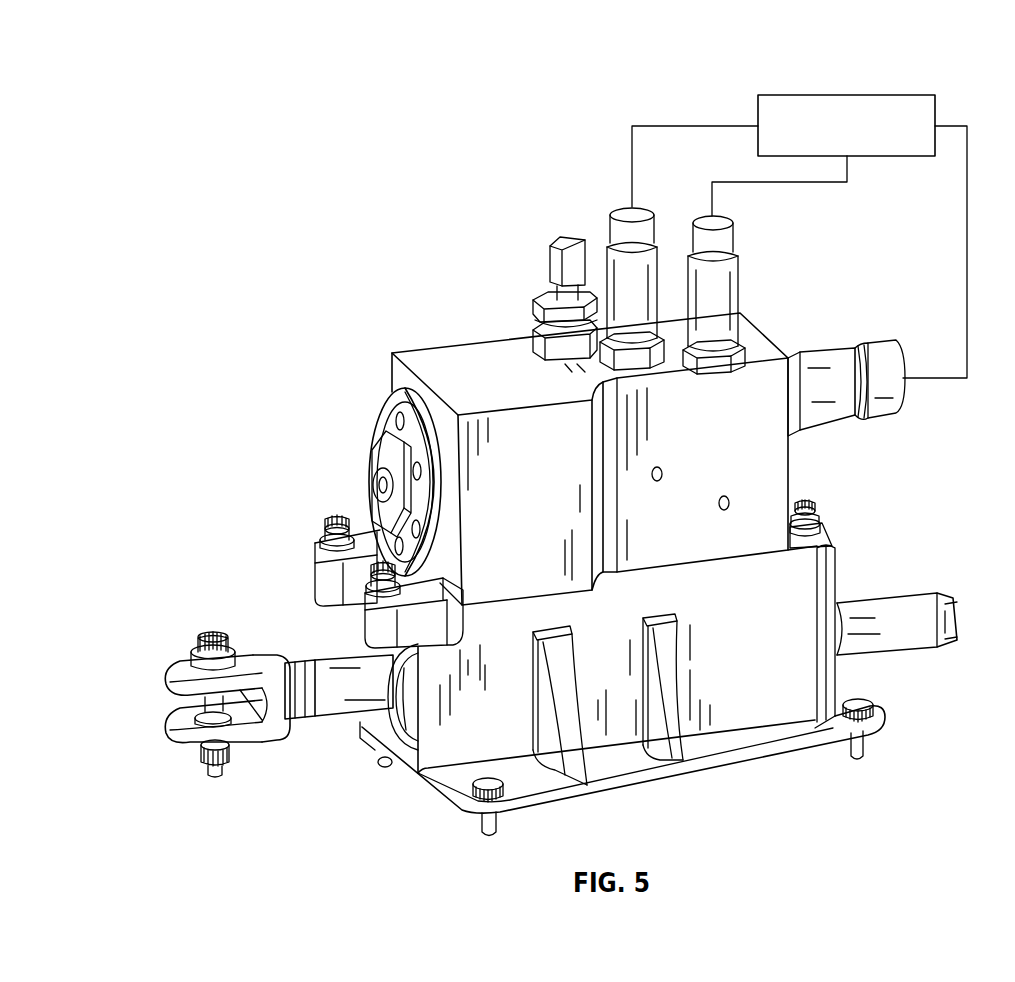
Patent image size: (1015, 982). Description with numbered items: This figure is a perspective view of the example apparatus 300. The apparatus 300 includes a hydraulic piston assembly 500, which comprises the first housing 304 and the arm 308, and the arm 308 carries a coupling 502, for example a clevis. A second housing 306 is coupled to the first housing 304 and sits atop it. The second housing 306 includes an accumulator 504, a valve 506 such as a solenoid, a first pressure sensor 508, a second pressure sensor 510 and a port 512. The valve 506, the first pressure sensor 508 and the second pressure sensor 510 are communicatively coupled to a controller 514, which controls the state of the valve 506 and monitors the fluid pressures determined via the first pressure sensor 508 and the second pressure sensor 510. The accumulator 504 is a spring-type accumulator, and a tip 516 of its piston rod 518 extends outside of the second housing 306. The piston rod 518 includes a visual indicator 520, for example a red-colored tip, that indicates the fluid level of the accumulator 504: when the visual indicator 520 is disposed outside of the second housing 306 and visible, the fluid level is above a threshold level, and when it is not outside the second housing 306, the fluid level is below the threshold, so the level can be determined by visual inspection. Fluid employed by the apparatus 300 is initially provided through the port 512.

The apparatus 300 is at (330, 191).
The first housing 304 is at (770, 710).
The second housing 306 is at (788, 482).
The arm 308 is at (338, 714).
The hydraulic piston assembly 500 is at (856, 538).
The coupling 502 is at (183, 665).
The accumulator 504 is at (380, 408).
The valve 506 is at (876, 348).
The first pressure sensor 508 is at (609, 220).
The second pressure sensor 510 is at (740, 233).
The port 512 is at (553, 258).
The controller 514 is at (898, 95).
The tip 516 is at (378, 503).
The piston rod 518 is at (378, 466).
The visual indicator 520 is at (376, 485).